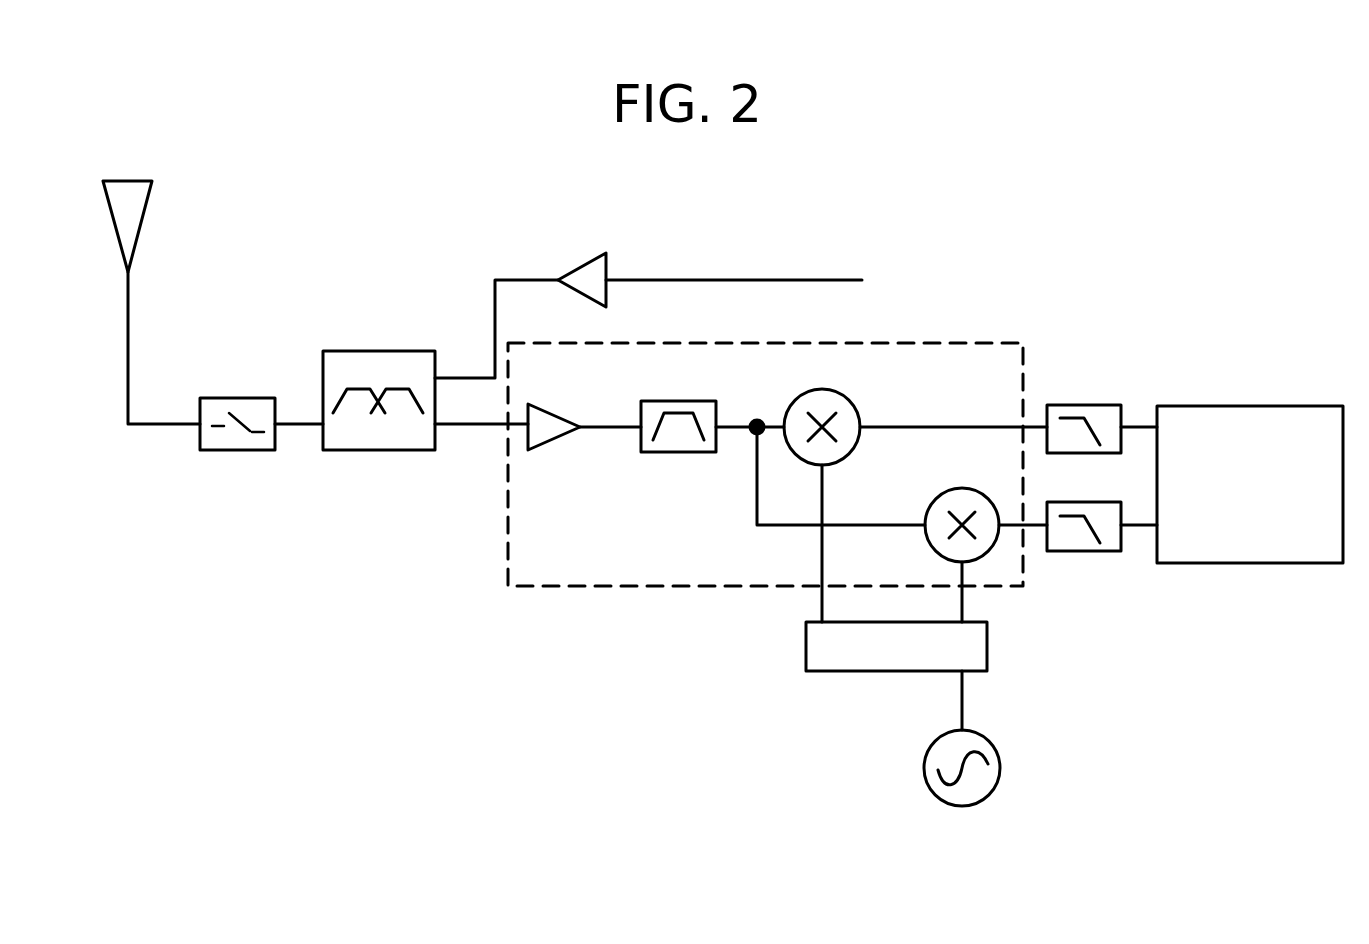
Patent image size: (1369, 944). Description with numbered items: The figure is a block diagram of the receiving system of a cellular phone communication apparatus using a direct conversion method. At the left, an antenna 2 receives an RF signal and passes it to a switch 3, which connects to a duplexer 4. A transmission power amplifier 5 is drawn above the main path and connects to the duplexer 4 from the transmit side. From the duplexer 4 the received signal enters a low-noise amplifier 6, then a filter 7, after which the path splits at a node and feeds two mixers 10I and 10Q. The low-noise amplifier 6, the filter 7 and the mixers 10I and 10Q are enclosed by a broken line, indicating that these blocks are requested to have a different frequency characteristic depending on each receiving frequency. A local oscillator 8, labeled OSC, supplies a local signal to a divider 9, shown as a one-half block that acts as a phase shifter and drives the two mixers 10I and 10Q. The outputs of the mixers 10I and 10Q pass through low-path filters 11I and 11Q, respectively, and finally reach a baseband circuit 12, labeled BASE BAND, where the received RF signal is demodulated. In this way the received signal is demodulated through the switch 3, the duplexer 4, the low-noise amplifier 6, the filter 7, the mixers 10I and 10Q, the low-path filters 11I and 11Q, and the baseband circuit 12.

The antenna 2 is at (118, 230).
The switch 3 is at (237, 398).
The duplexer 4 is at (372, 351).
The transmission power amplifier 5 is at (582, 270).
The low-noise amplifier 6 is at (550, 417).
The filter 7 is at (678, 454).
The local oscillator 8 is at (1000, 768).
The divider 9 is at (987, 646).
The mixer 10I is at (848, 410).
The mixer 10Q is at (934, 500).
The low-path filter 11I is at (1078, 404).
The low-path filter 11Q is at (1102, 552).
The baseband circuit 12 is at (1260, 406).